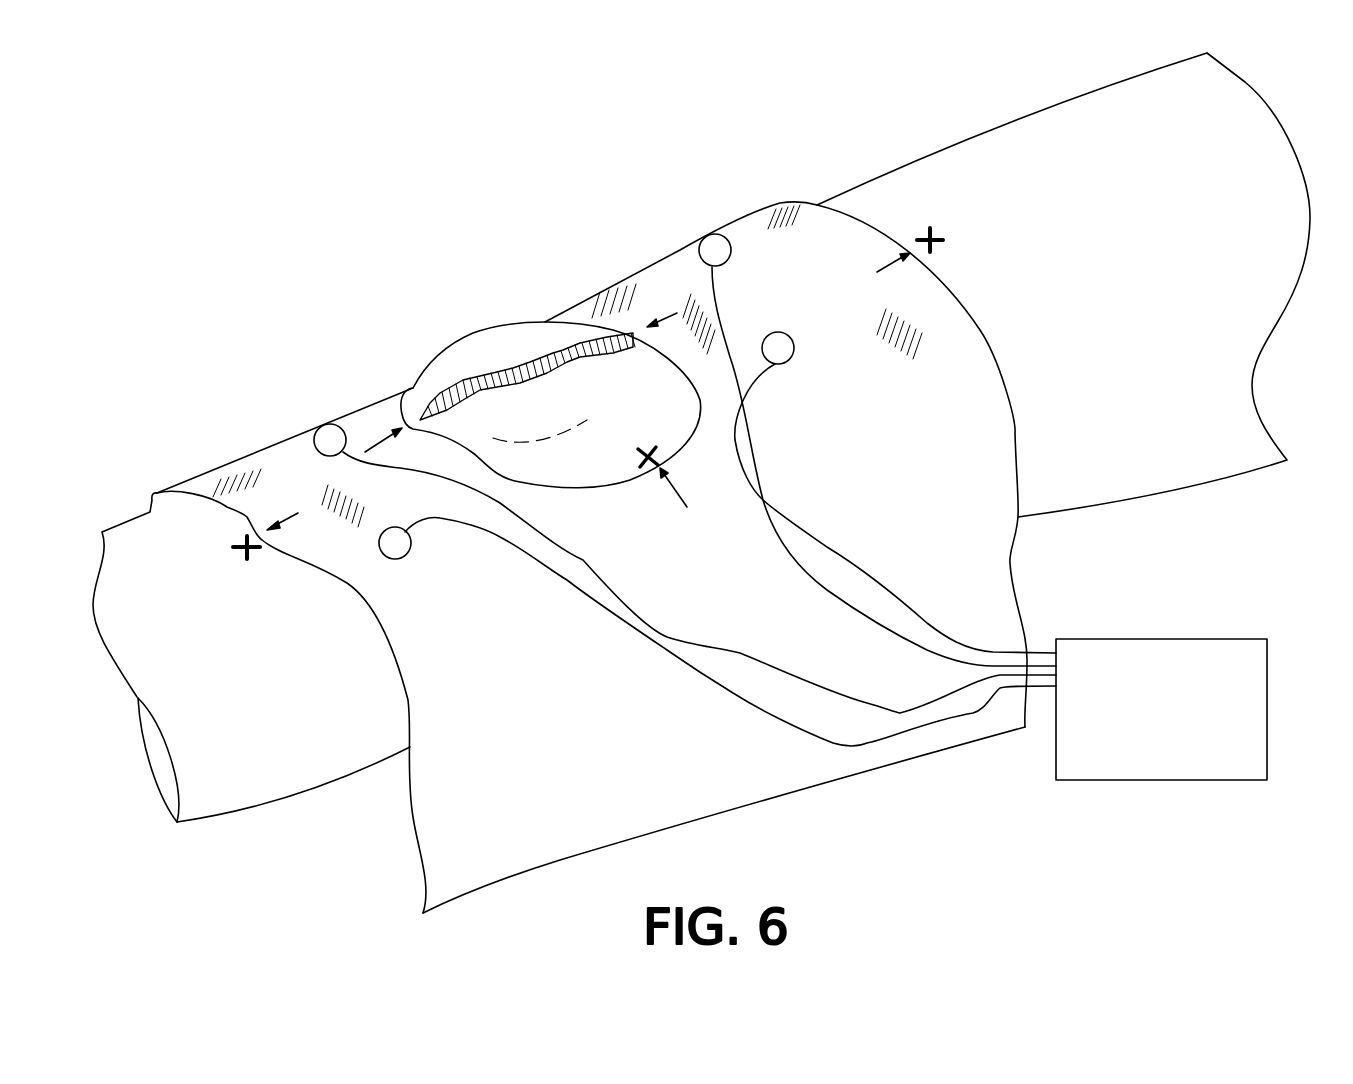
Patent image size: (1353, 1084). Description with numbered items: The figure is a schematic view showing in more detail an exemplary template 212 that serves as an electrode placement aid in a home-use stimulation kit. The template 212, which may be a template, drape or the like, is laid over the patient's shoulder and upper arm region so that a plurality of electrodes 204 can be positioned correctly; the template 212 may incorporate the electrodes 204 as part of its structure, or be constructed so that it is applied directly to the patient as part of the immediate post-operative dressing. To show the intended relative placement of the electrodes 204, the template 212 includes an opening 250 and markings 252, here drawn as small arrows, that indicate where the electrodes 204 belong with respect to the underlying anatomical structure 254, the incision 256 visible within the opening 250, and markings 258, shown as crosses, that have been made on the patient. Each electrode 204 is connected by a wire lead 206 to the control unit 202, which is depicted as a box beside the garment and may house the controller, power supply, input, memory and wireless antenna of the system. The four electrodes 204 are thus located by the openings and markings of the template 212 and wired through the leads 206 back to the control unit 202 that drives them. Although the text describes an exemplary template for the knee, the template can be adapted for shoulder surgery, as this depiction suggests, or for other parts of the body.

The control unit 202 is at (1161, 709).
The electrodes 204 is at (708, 236).
The wire leads 206 is at (743, 695).
The template 212 is at (223, 463).
The openings 250 is at (597, 490).
The markings 252 is at (670, 310).
The anatomical structure 254 is at (477, 335).
The incision 256 is at (550, 357).
The markings made on the patient 258 is at (650, 450).